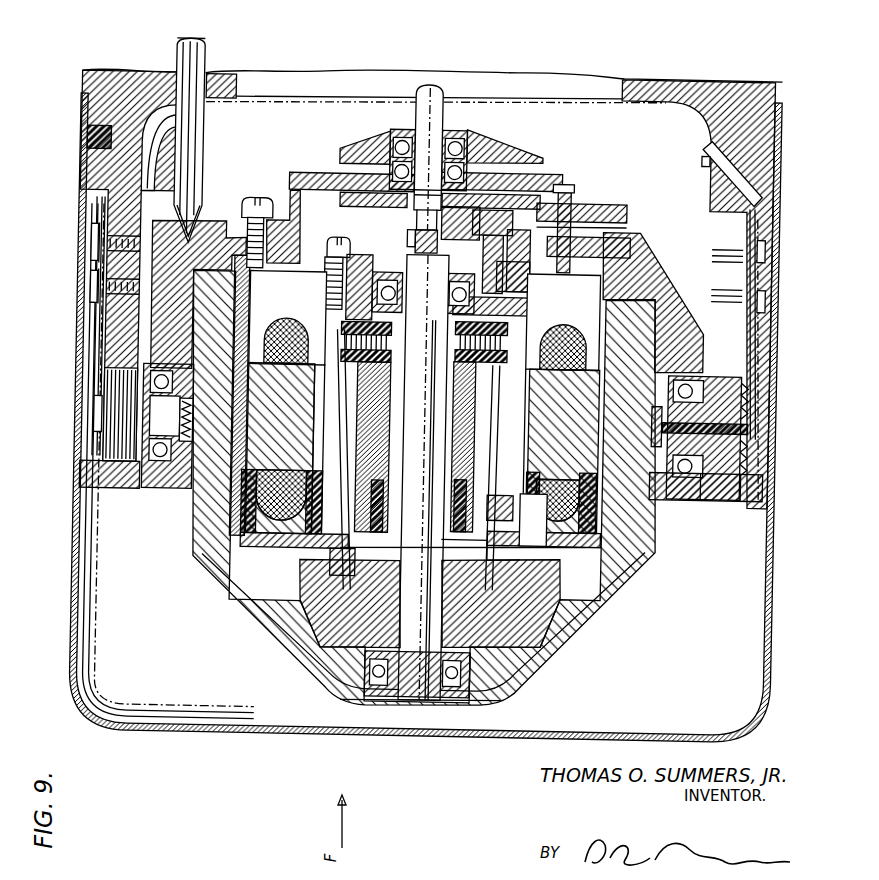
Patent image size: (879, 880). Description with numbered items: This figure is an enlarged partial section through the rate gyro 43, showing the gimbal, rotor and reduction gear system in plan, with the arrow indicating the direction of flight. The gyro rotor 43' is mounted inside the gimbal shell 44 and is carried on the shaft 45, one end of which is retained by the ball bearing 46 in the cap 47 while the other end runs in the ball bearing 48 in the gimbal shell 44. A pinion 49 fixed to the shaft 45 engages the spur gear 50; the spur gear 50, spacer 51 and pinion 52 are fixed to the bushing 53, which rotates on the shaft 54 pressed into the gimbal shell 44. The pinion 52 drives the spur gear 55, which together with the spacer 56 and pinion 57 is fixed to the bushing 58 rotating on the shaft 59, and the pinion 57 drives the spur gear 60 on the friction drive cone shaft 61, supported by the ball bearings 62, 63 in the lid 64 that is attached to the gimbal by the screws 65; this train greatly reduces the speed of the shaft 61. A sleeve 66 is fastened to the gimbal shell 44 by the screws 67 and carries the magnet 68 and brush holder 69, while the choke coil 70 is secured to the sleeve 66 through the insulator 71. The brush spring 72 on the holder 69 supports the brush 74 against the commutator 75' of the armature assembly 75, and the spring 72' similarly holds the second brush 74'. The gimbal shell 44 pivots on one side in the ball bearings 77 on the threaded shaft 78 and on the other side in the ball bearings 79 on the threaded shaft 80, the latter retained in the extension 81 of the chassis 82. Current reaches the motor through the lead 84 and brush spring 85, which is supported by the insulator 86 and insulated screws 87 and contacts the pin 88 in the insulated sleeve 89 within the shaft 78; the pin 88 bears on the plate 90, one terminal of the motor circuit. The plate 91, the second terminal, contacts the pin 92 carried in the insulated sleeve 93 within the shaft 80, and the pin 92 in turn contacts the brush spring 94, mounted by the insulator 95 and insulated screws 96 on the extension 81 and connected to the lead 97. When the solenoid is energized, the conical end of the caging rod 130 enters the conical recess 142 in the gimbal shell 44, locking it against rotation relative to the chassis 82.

The caging rod 130 is at (171, 60).
The lead 84 is at (189, 140).
The conical shaped recess 142 is at (188, 206).
The friction drive cone shaft 61 is at (423, 84).
The chassis 82 is at (670, 68).
The ball bearing 62 is at (387, 165).
The ball bearing 63 is at (393, 150).
The pinion 52 is at (427, 182).
The spacer 51 is at (426, 217).
The screws 65 is at (254, 201).
The lid 64 is at (286, 195).
The spur gear 60 is at (306, 182).
The screws 67 is at (327, 240).
The sleeve 66 is at (323, 294).
The pinion 49 is at (404, 236).
The spur gear 50 is at (412, 248).
The shaft 54 is at (482, 262).
The bushing 53 is at (512, 270).
The shaft 59 is at (560, 270).
The bushing 58 is at (563, 183).
The pinion 57 is at (579, 202).
The spacer 56 is at (595, 217).
The spur gear 55 is at (609, 234).
The lead 97 is at (701, 152).
The gimbal shell 44 is at (665, 260).
The ball bearing 48 is at (445, 294).
The shaft 45 is at (413, 470).
The armature assembly 75 is at (297, 409).
The brush holder 69 is at (360, 364).
The brush spring 72 is at (343, 459).
The choke coil 70 is at (373, 501).
The brush 74 is at (449, 597).
The spring 72' is at (478, 456).
The magnet 68 is at (470, 499).
The second brush 74' is at (499, 525).
The insulator 71 is at (463, 539).
The commutator 75' is at (545, 435).
The ball bearing 46 is at (457, 690).
The cap 47 is at (486, 700).
The rate gyro 43 is at (425, 437).
The gyro rotor 43' is at (402, 464).
The brush spring 85 is at (94, 355).
The insulated screws 87 is at (90, 239).
The insulator 86 is at (98, 269).
The pin 88 is at (105, 415).
The insulated sleeve 89 is at (94, 432).
The threaded shaft 78 is at (126, 494).
The ball bearings 77 is at (159, 467).
The plate 90 is at (193, 424).
The threaded shaft 80 is at (710, 371).
The plate 91 is at (652, 415).
The pin 92 is at (749, 423).
The brush spring 94 is at (752, 338).
The insulator 95 is at (742, 268).
The insulated screws 96 is at (763, 243).
The ball bearings 79 is at (691, 495).
The extension 81 is at (721, 495).
The insulated sleeve 93 is at (736, 485).